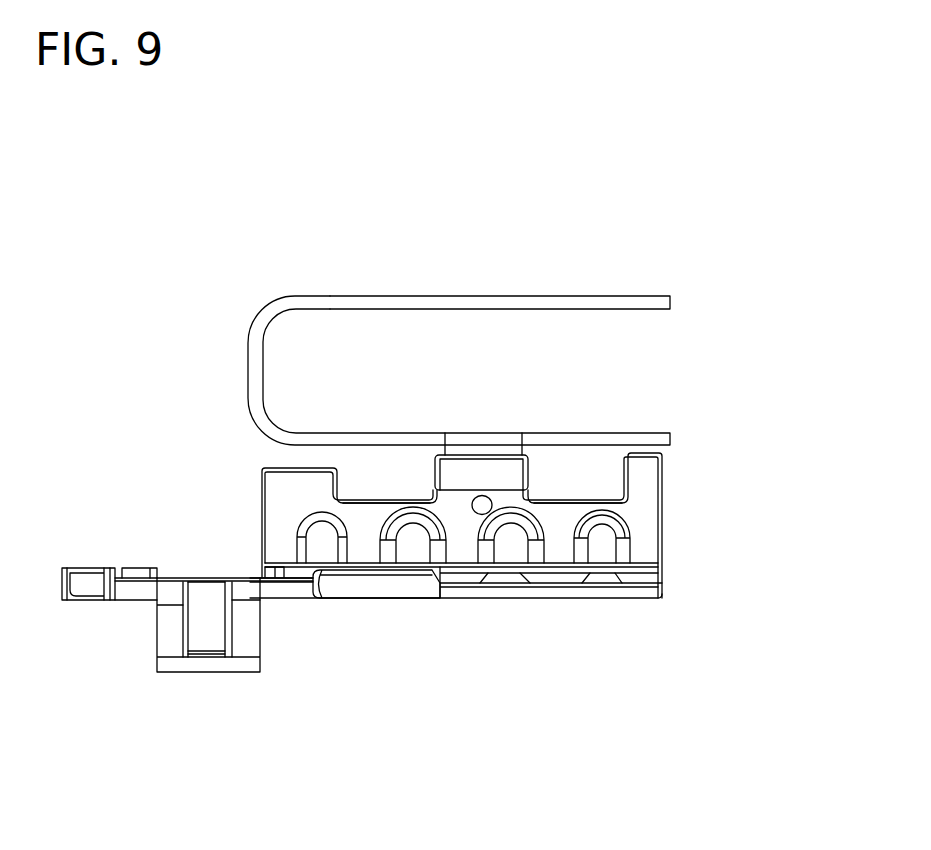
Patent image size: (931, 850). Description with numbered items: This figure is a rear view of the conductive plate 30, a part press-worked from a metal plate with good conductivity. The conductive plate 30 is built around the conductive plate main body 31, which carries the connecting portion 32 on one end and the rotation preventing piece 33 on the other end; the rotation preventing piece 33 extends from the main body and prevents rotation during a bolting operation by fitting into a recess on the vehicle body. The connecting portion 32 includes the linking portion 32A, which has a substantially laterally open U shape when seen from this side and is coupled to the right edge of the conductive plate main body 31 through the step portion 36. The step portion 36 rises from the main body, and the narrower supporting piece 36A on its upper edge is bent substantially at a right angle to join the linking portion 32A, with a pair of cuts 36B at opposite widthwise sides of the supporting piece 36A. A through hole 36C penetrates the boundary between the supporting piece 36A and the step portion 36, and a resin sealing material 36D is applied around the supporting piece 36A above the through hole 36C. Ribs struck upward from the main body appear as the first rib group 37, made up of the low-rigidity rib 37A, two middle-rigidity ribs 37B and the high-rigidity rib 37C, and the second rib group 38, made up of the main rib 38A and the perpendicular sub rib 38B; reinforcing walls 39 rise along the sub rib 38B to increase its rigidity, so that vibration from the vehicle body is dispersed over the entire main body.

The conductive plate 30 is at (368, 158).
The conductive plate main body 31 is at (469, 619).
The connecting portion 32 is at (455, 272).
The linking portion 32A is at (563, 298).
The rotation preventing piece 33 is at (178, 662).
The step portion 36 is at (663, 490).
The supporting piece 36A is at (502, 442).
The cuts 36B is at (382, 503).
The through hole 36C is at (470, 493).
The sealing material 36D is at (472, 468).
The first rib group 37 is at (632, 552).
The low-rigidity rib 37A is at (318, 548).
The middle-rigidity ribs 37B is at (412, 552).
The high-rigidity rib 37C is at (601, 552).
The second rib group 38 is at (177, 625).
The main rib 38A is at (208, 620).
The sub rib 38B is at (143, 568).
The reinforcing walls 39 is at (78, 578).